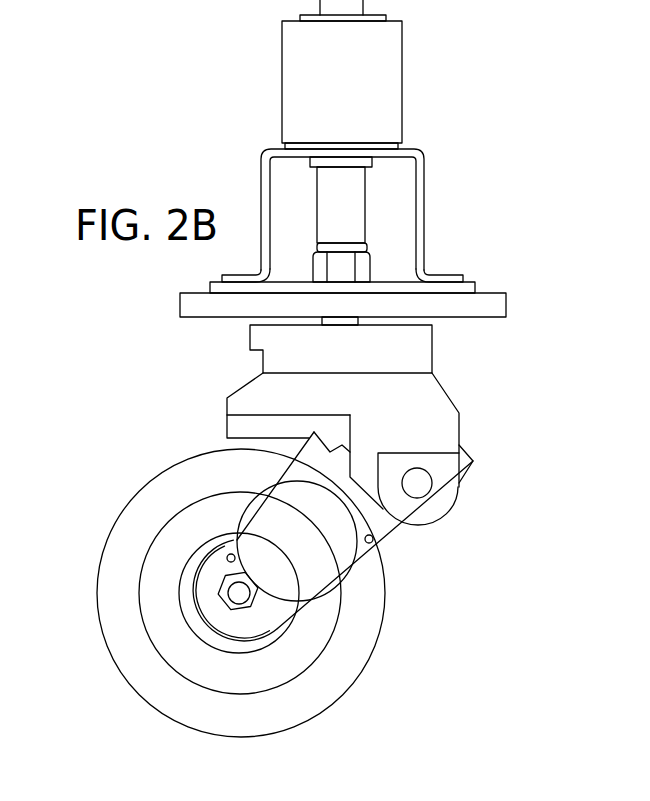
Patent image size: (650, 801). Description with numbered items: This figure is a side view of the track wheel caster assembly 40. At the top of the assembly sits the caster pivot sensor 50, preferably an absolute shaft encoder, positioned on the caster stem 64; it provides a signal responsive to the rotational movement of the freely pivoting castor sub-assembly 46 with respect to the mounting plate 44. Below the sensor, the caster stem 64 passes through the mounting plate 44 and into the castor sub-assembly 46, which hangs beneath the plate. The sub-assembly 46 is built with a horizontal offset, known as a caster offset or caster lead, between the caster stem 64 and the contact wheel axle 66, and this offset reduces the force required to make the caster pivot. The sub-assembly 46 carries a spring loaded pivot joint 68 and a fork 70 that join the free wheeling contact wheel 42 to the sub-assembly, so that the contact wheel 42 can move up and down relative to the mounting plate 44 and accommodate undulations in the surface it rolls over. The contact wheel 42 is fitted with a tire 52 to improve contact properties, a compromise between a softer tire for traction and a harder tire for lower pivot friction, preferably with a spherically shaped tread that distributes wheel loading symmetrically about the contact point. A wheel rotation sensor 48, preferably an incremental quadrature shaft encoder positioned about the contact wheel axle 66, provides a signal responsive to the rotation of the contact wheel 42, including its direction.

The track wheel caster assembly 40 is at (159, 359).
The contact wheel 42 is at (168, 634).
The mounting plate 44 is at (507, 300).
The freely pivoting castor sub-assembly 46 is at (438, 403).
The wheel rotation sensor 48 is at (330, 574).
The caster pivot sensor 50 is at (390, 80).
The tire 52 is at (122, 557).
The caster stem 64 is at (340, 322).
The contact wheel axle 66 is at (238, 597).
The spring loaded pivot joint 68 is at (422, 490).
The fork 70 is at (305, 467).